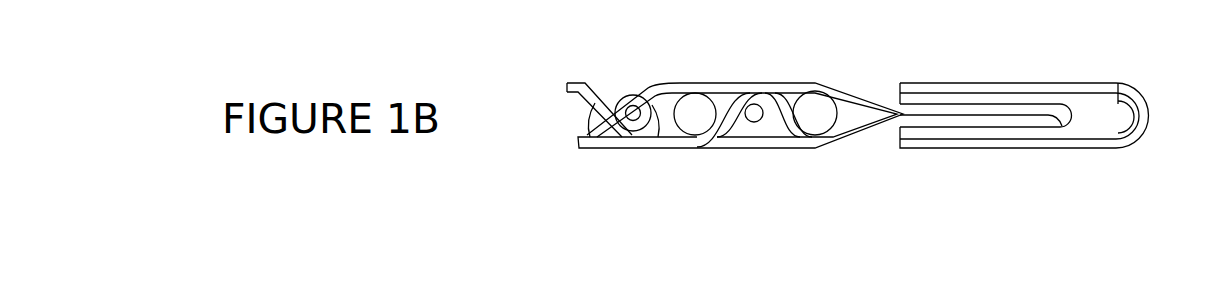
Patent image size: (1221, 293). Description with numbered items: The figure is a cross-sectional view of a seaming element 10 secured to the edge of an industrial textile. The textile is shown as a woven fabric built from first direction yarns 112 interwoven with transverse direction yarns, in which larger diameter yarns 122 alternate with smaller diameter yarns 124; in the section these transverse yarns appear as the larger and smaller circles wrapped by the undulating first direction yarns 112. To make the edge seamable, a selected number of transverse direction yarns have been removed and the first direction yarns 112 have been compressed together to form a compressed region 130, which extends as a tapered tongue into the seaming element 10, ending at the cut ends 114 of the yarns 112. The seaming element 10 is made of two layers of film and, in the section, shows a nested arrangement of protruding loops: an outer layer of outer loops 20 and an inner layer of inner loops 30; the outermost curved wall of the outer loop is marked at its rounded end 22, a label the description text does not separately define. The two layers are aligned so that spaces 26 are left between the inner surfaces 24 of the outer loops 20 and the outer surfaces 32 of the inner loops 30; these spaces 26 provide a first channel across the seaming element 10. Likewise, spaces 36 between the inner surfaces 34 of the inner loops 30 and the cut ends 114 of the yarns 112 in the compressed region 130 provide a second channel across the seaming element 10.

The seaming element 10 is at (1049, 112).
The outer loops 20 is at (1130, 132).
The outer shell end 22 is at (1147, 115).
The inner surfaces of outer loops 24 is at (1120, 83).
The spaces 26 is at (1097, 113).
The inner loops 30 is at (1043, 130).
The outer surfaces of inner loops 32 is at (1083, 115).
The inner surfaces of inner loops 34 is at (1062, 120).
The spaces 36 is at (1025, 117).
The first direction yarns 112 is at (568, 87).
The cut ends 114 is at (1010, 120).
The larger diameter yarns 122 is at (813, 115).
The smaller diameter yarns 124 is at (630, 115).
The compressed region 130 is at (940, 120).